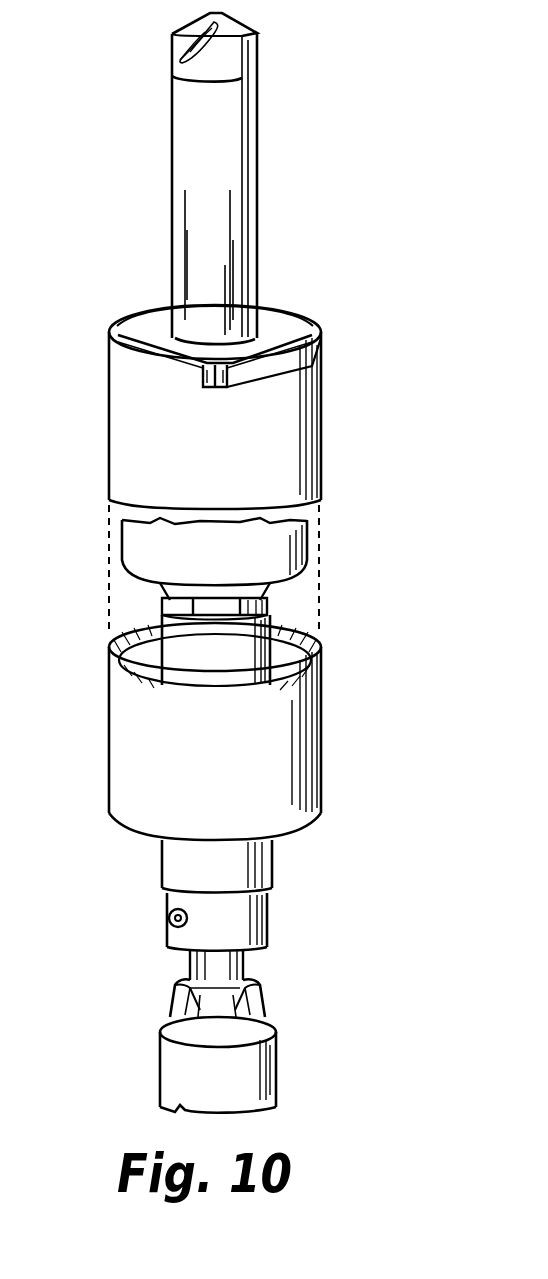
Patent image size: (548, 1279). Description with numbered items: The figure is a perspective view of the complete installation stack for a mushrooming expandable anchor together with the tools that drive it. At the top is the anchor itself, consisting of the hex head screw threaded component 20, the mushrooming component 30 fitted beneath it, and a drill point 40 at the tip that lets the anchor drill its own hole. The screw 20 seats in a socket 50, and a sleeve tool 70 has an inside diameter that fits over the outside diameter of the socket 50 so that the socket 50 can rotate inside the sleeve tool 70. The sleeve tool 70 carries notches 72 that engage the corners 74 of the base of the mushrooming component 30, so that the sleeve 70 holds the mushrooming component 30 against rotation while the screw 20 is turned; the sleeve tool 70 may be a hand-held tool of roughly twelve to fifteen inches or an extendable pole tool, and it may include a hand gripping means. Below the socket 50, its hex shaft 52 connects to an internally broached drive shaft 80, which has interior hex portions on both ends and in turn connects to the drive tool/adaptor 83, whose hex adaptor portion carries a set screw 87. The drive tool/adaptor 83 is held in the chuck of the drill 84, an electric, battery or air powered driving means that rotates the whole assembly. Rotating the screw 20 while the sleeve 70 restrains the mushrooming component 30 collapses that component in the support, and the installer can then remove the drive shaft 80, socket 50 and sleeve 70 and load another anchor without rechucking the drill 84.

The hex head screw threaded component 20 is at (350, 415).
The mushrooming component 30 is at (230, 165).
The drill point 40 is at (258, 54).
The socket 50 is at (233, 564).
The hex shaft 52 is at (272, 593).
The sleeve tool 70 is at (233, 459).
The notches 72 is at (233, 385).
The corners 74 is at (280, 333).
The internally broached drive shaft 80 is at (231, 664).
The drive tool/adaptor 83 is at (233, 931).
The drill 84 is at (233, 1091).
The set screw 87 is at (167, 920).